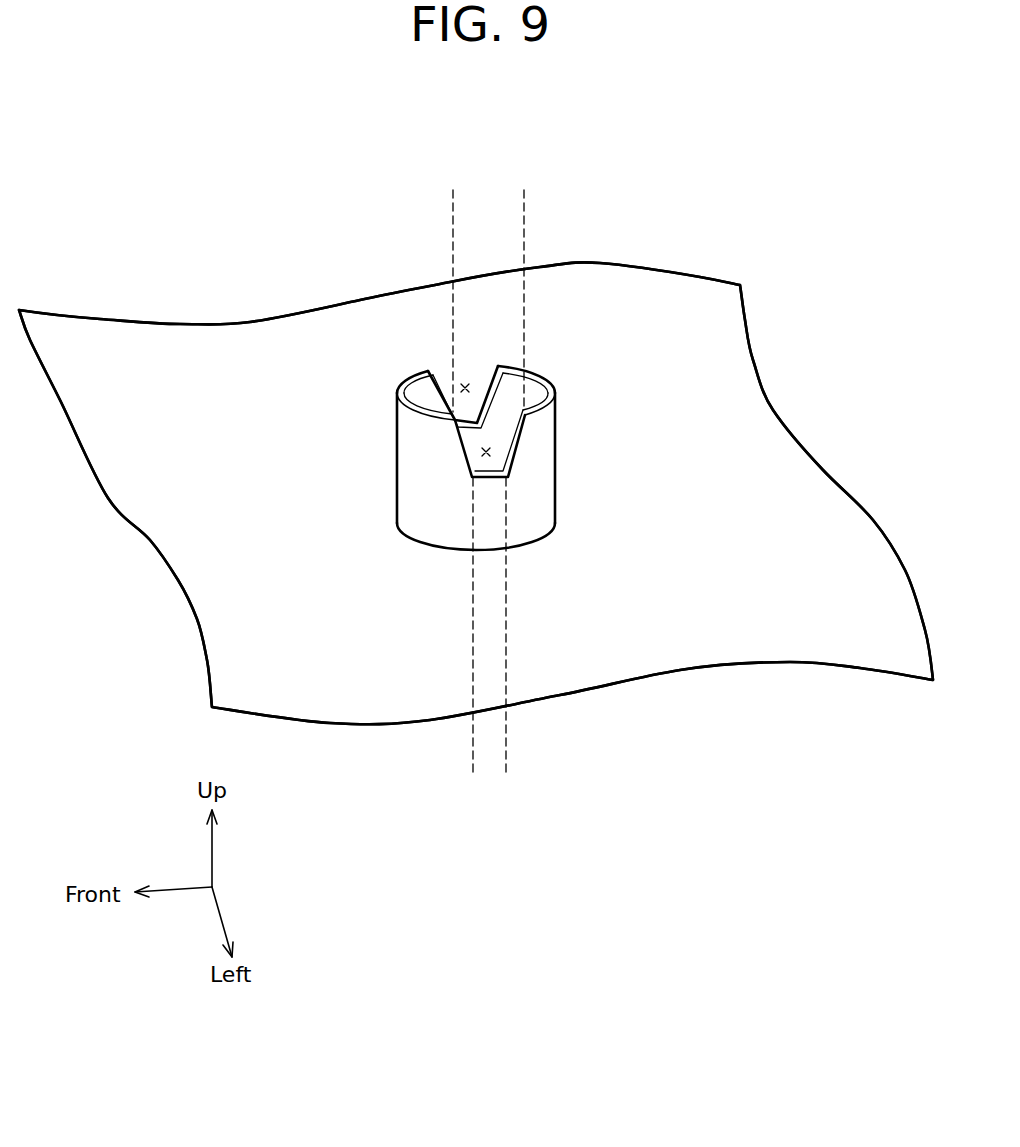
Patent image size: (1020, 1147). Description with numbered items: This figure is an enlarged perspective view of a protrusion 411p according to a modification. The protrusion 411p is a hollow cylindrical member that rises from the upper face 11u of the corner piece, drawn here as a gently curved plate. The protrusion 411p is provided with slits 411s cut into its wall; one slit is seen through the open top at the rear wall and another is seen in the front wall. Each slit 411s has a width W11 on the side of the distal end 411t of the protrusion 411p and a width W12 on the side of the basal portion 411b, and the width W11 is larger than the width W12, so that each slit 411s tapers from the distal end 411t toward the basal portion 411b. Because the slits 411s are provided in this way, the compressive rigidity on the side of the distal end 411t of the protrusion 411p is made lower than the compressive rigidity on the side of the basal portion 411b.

The protrusion 411p is at (567, 342).
The upper face 11u is at (678, 555).
The distal end 411t is at (413, 378).
The slit 411s is at (462, 382).
The basal portion 411b is at (516, 548).
The width of slit on distal end side W11 is at (524, 200).
The width of slit on basal portion side W12 is at (540, 769).